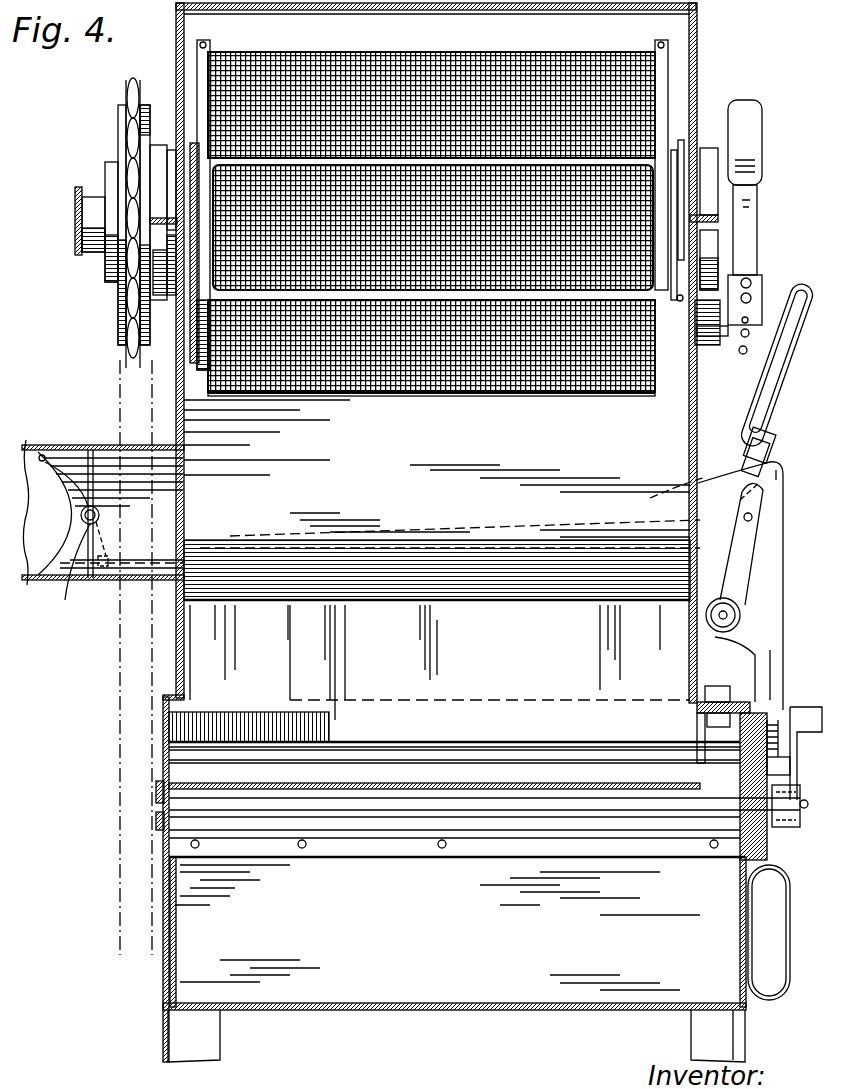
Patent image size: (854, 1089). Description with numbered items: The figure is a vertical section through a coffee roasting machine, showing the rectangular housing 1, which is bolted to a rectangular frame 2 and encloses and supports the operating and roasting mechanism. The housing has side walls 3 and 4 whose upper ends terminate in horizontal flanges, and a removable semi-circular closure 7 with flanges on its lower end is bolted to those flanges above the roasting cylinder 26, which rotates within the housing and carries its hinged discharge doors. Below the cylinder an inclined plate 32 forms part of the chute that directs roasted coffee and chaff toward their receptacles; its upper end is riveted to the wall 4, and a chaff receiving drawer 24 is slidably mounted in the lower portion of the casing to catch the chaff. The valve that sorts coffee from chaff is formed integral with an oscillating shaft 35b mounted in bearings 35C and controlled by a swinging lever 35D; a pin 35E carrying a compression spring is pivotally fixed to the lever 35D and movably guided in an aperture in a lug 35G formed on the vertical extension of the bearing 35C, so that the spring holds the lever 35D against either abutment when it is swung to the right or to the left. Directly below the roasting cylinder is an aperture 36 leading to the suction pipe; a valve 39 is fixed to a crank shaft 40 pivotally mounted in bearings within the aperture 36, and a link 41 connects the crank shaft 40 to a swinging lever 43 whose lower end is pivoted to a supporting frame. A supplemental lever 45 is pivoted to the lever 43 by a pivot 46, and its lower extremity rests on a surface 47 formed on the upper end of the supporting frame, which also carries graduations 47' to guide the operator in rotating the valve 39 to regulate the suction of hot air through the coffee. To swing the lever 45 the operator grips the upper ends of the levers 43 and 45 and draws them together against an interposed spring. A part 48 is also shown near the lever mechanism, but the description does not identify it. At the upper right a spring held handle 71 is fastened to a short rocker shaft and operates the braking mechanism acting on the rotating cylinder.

The housing 1 is at (183, 347).
The rectangular frame 2 is at (167, 1040).
The side wall 3 is at (184, 653).
The side wall 4 is at (700, 648).
The removable semi-circular closure 7 is at (697, 70).
The chaff receiving drawer 24 is at (190, 975).
The roasting cylinder 26 is at (395, 62).
The inclined plate 32 is at (200, 407).
The aperture 36 is at (55, 433).
The valve 39 is at (105, 433).
The crank shaft 40 is at (96, 586).
The link 41 is at (719, 524).
The swinging lever 43 is at (773, 378).
The supplemental lever 45 is at (802, 290).
The pivot 46 is at (808, 438).
The surface 47 is at (740, 579).
The graduations 47' is at (725, 499).
The roller 48 is at (741, 616).
The spring held handle 71 is at (748, 122).
The lug 35G is at (762, 702).
The pin 35E is at (776, 702).
The swinging lever 35D is at (806, 720).
The bearings 35C is at (760, 833).
The oscillating or swinging shaft 35b is at (372, 814).